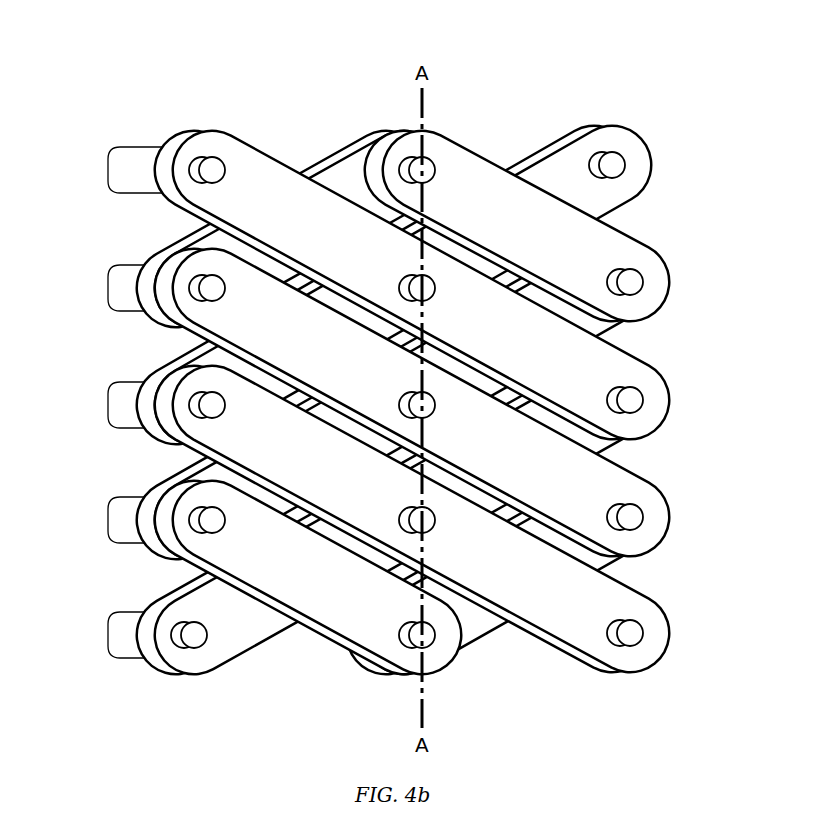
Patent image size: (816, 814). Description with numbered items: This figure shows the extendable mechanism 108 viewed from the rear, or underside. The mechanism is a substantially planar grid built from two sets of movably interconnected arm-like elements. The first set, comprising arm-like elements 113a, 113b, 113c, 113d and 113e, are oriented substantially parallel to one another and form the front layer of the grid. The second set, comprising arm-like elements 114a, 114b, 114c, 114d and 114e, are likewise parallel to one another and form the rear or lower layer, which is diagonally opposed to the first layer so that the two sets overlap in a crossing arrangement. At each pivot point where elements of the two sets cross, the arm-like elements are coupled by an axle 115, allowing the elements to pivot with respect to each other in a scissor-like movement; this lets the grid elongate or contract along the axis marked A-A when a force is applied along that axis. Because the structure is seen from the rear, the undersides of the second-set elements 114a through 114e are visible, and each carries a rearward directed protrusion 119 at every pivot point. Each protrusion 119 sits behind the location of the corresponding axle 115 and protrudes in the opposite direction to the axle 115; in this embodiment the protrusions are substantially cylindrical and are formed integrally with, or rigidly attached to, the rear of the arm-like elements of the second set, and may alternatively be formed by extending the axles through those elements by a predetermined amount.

The extendable mechanism 108 is at (270, 68).
The arm-like element 113a is at (157, 330).
The arm-like element 113b is at (157, 447).
The arm-like element 113c is at (157, 562).
The arm-like element 113d is at (157, 677).
The arm-like element 113e is at (493, 630).
The arm-like element 114a is at (648, 259).
The arm-like element 114b is at (648, 376).
The arm-like element 114c is at (648, 493).
The arm-like element 114d is at (648, 609).
The arm-like element 114e is at (305, 630).
The axle 115 is at (108, 164).
The rearward directed protrusion 119 is at (228, 178).